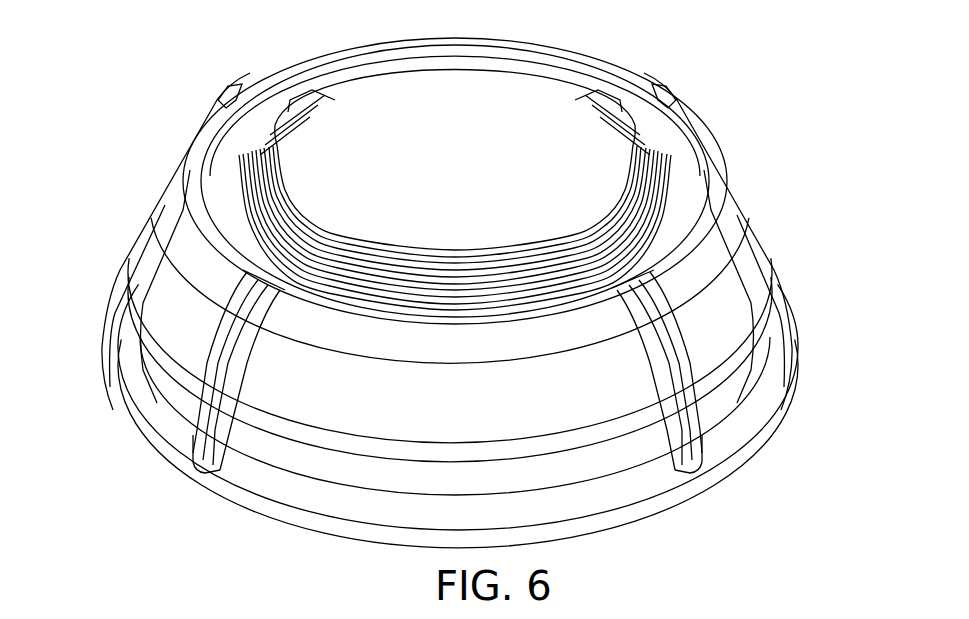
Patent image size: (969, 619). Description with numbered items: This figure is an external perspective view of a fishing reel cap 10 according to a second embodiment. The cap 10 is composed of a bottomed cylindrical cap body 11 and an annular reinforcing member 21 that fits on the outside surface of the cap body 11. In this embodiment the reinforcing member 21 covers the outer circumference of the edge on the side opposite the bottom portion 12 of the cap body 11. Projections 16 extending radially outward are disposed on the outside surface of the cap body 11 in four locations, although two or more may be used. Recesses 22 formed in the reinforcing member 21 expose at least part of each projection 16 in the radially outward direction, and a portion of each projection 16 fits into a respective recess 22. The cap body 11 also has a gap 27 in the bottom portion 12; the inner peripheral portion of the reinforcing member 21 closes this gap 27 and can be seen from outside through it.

The cap 10 is at (622, 2).
The cap body 11 is at (725, 180).
The bottom portion 12 is at (405, 110).
The projections 16 is at (225, 88).
The reinforcing member 21 is at (783, 367).
The recesses 22 is at (200, 462).
The gap 27 is at (200, 147).